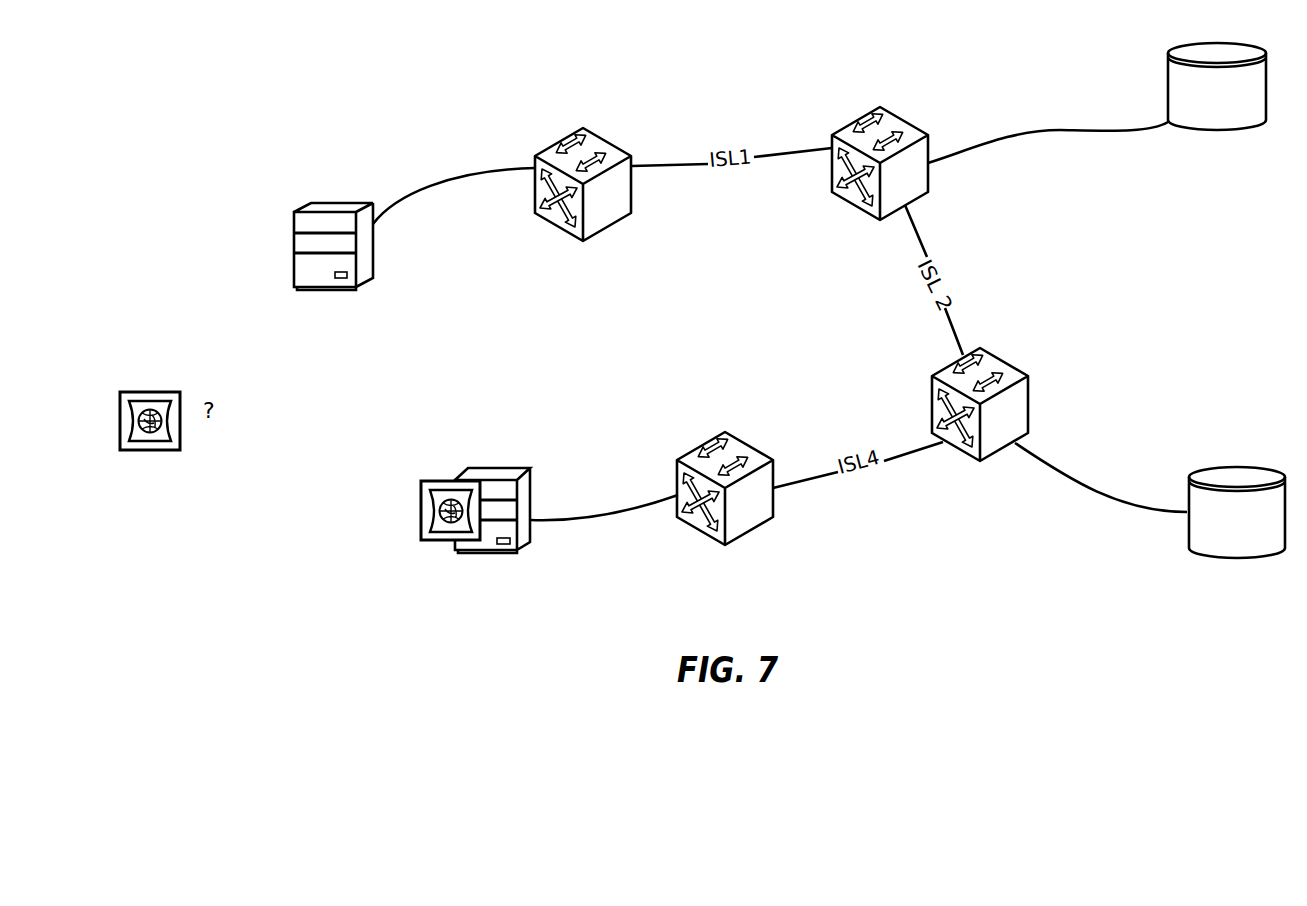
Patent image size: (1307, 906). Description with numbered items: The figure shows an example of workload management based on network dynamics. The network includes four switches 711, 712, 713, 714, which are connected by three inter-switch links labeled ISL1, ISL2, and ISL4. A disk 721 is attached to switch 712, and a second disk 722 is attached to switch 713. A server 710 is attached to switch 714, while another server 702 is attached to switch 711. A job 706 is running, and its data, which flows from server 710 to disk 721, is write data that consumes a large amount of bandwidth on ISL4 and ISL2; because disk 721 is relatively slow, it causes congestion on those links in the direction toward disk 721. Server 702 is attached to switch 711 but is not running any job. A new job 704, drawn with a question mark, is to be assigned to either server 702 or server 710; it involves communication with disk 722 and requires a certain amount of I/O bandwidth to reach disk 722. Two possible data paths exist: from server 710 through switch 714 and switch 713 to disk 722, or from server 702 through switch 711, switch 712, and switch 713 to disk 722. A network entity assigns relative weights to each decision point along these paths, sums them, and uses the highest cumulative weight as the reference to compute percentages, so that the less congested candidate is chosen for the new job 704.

The server 702 is at (345, 201).
The new job 704 is at (157, 392).
The job 706 is at (454, 480).
The server 710 is at (518, 553).
The switch 711 is at (558, 138).
The switch 712 is at (843, 125).
The switch 713 is at (980, 345).
The switch 714 is at (740, 437).
The disk 721 is at (1217, 86).
The disk 722 is at (1237, 512).